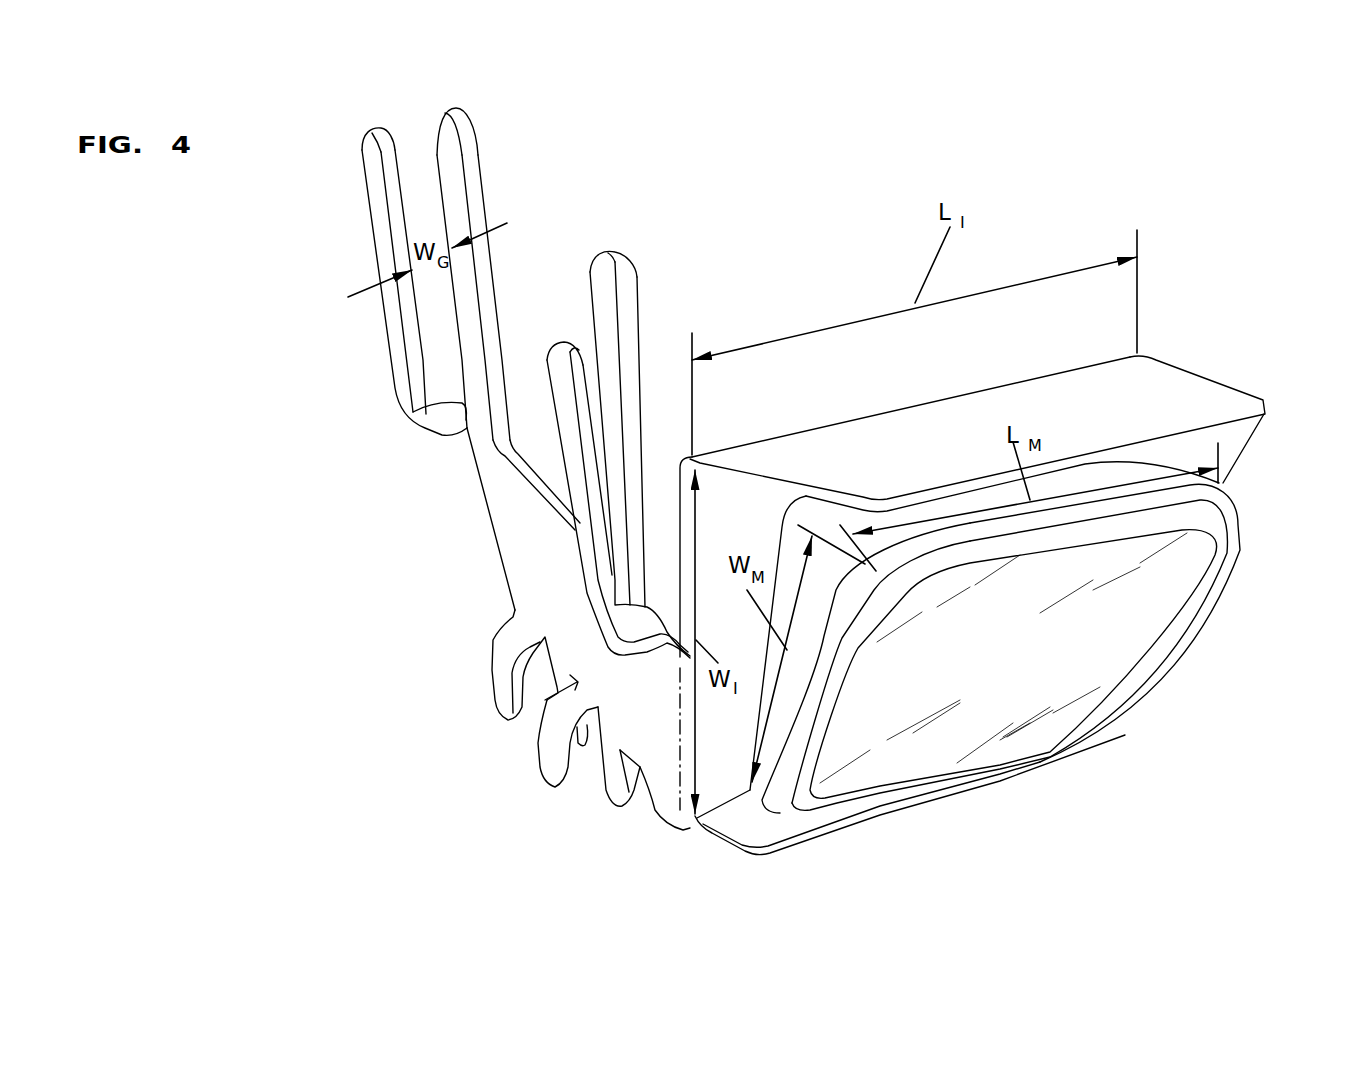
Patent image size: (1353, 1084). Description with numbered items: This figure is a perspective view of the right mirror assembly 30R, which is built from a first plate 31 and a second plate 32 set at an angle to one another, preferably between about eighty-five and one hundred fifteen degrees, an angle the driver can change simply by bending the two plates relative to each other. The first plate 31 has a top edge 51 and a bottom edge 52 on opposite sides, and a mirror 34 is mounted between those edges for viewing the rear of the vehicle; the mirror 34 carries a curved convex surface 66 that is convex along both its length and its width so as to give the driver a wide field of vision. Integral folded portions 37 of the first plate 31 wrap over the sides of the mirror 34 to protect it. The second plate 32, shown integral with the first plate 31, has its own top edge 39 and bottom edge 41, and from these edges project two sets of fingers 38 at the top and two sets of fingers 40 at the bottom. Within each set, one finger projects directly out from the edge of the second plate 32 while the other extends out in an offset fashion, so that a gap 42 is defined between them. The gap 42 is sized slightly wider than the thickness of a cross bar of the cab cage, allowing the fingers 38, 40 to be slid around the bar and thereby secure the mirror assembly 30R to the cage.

The right mirror assembly 30R is at (1207, 243).
The first plate 31 is at (725, 783).
The second plate 32 is at (543, 553).
The mirror 34 is at (1205, 562).
The folded portions 37 is at (1202, 390).
The fingers 38 is at (455, 110).
The top edge 39 is at (520, 467).
The fingers 40 is at (547, 763).
The bottom edge 41 is at (645, 783).
The gap 42 is at (438, 367).
The top edge 51 is at (812, 428).
The bottom edge 52 is at (877, 810).
The curved convex surface 66 is at (1038, 677).